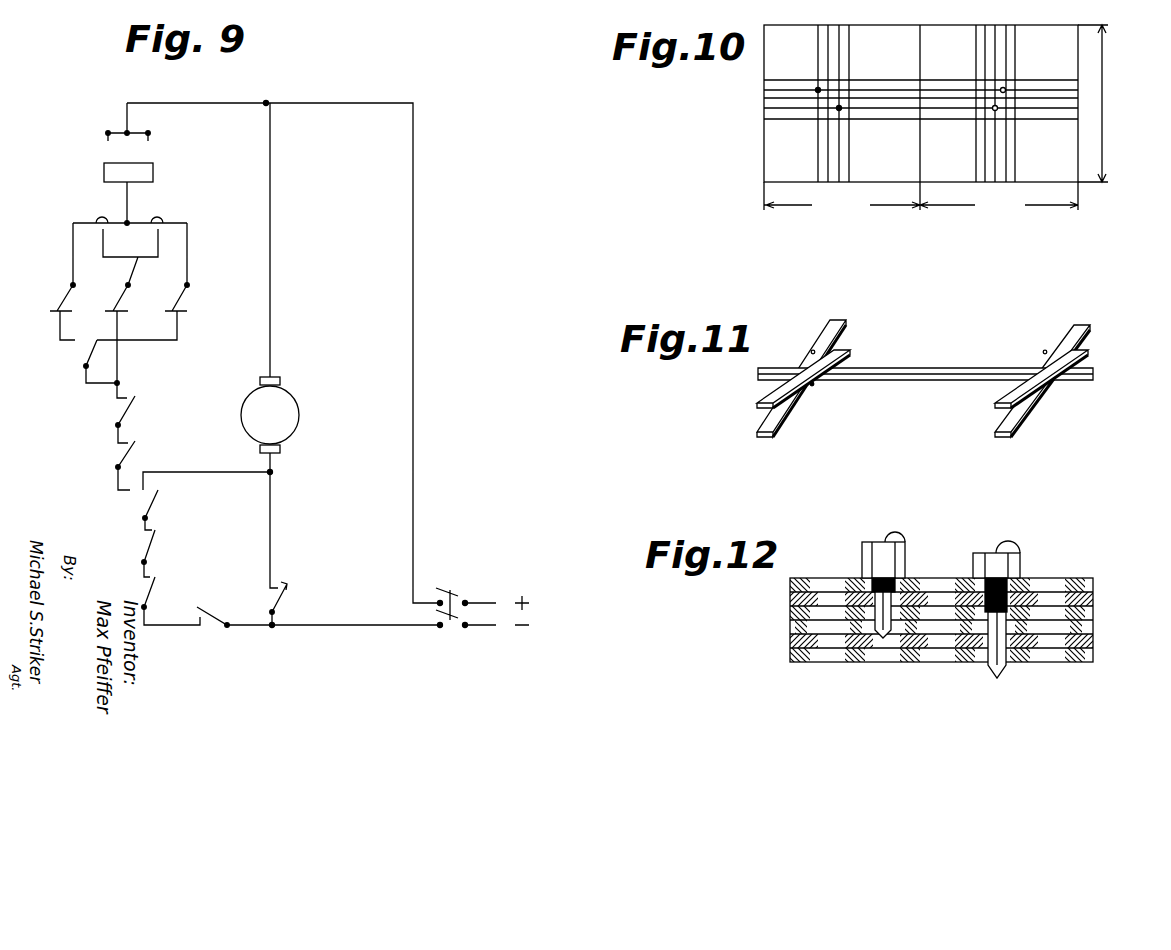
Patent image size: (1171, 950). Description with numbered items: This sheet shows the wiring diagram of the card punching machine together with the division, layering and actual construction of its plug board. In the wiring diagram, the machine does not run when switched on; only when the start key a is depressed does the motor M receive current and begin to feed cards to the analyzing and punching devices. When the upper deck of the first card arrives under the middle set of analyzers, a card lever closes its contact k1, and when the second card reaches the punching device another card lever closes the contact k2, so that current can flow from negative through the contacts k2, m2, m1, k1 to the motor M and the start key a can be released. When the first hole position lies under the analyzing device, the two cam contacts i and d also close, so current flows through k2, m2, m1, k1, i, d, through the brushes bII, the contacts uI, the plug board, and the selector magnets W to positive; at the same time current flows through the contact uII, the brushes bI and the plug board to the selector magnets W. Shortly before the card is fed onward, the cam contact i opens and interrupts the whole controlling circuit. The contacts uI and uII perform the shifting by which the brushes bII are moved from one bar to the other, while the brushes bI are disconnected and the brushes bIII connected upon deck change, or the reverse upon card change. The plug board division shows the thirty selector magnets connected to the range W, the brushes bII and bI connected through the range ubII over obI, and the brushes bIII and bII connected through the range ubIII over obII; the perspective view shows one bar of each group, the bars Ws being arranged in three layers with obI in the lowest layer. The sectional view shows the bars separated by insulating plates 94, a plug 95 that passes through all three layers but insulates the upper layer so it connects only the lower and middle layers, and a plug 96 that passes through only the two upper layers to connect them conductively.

In FIG. 9, the selector magnets W is at (162, 159).
In FIG. 9, the contact u_I uI is at (130, 251).
In FIG. 9, the brushes b_III bIII is at (80, 306).
In FIG. 9, the brushes b_II bII is at (136, 328).
In FIG. 12, the brushes b_II bII is at (1095, 595).
In FIG. 9, the brushes b_I bI is at (161, 306).
In FIG. 12, the brushes b_I bI is at (1093, 645).
In FIG. 9, the contact u_II uII is at (91, 362).
In FIG. 9, the cam contact d is at (133, 413).
In FIG. 9, the cam contact i is at (129, 464).
In FIG. 9, the card lever contact k1 is at (163, 509).
In FIG. 9, the contact m1 is at (163, 553).
In FIG. 9, the contact m2 is at (171, 601).
In FIG. 9, the card lever contact k2 is at (320, 603).
In FIG. 9, the start key a is at (286, 598).
In FIG. 9, the motor M is at (270, 415).
In FIG. 10, the bars Ws is at (1106, 103).
In FIG. 11, the bars Ws is at (1093, 375).
In FIG. 12, the bars Ws is at (1093, 622).
In FIG. 10, the range ub_III ubIII is at (860, 215).
In FIG. 11, the range ub_III ubIII is at (757, 403).
In FIG. 10, the range ob_II obII is at (834, 229).
In FIG. 11, the range ob_II obII is at (762, 432).
In FIG. 10, the range ub_II ubII is at (1020, 215).
In FIG. 11, the range ub_II ubII is at (996, 405).
In FIG. 10, the range ob_I obI is at (994, 229).
In FIG. 11, the range ob_I obI is at (1002, 432).
In FIG. 12, the insulating plates 94 is at (790, 655).
In FIG. 12, the plug 95 is at (998, 568).
In FIG. 12, the plug 96 is at (878, 560).